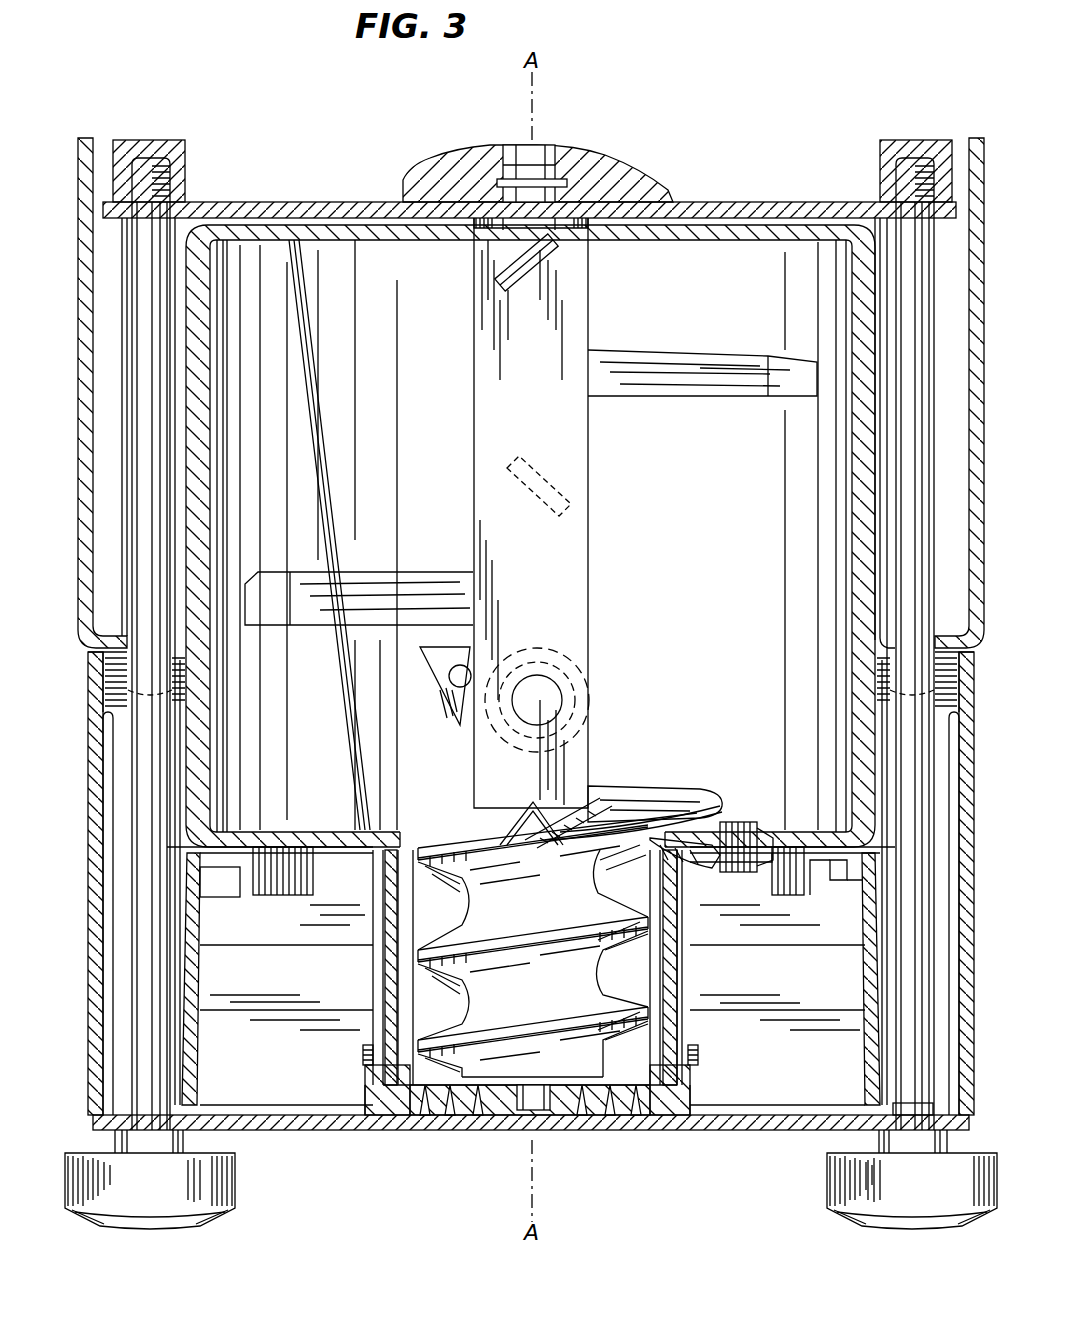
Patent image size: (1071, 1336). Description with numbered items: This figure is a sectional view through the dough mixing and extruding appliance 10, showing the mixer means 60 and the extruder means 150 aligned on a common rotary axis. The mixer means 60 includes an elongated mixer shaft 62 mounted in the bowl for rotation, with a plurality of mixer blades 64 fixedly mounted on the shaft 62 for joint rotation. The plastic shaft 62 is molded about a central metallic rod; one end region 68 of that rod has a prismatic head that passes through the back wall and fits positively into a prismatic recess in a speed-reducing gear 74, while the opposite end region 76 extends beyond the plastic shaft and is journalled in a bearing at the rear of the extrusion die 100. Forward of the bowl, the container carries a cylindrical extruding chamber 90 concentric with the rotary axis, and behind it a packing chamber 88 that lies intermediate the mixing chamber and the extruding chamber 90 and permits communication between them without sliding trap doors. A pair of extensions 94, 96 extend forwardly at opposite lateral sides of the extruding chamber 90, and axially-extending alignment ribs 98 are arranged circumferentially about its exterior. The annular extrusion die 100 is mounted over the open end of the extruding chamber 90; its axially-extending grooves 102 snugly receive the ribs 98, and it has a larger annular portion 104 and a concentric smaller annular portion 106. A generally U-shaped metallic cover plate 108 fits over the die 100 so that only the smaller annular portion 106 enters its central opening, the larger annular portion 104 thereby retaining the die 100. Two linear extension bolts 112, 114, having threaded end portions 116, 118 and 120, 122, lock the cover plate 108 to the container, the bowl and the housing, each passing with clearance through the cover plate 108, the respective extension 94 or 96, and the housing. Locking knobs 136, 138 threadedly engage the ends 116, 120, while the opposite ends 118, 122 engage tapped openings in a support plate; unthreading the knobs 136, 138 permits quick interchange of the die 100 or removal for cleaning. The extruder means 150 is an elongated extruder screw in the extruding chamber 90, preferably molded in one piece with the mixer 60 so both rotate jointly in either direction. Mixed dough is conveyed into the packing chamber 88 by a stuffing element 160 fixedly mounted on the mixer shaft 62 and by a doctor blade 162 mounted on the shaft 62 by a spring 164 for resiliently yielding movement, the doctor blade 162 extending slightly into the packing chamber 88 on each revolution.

The food processing device 10 is at (746, 172).
The mixer means 60 is at (472, 479).
The mixer shaft 62 is at (580, 628).
The mixer blades 64 is at (505, 283).
The end region of metallic rod 68 is at (538, 212).
The speed-reducing gear 74 is at (458, 165).
The opposite end region of metallic rod 76 is at (538, 1106).
The packing chamber 88 is at (743, 836).
The extruding chamber 90 is at (386, 922).
The extension 94 is at (198, 1072).
The extension 96 is at (870, 1010).
The alignment ribs 98 is at (376, 992).
The extrusion die 100 is at (505, 1134).
The grooves 102 is at (364, 1057).
The larger annular portion 104 is at (364, 1109).
The smaller annular portion 106 is at (411, 1134).
The cover plate 108 is at (338, 1132).
The extension bolt 112 is at (138, 604).
The extension bolt 114 is at (928, 590).
The threaded end portion 116 is at (172, 1121).
The threaded end portion 118 is at (160, 178).
The threaded end portion 120 is at (912, 1113).
The threaded end portion 122 is at (900, 184).
The locking knob 136 is at (196, 1228).
The locking knob 138 is at (828, 1165).
The extruder means 150 is at (455, 868).
The stuffing element 160 is at (700, 800).
The doctor blade 162 is at (698, 886).
The spring 164 is at (594, 784).